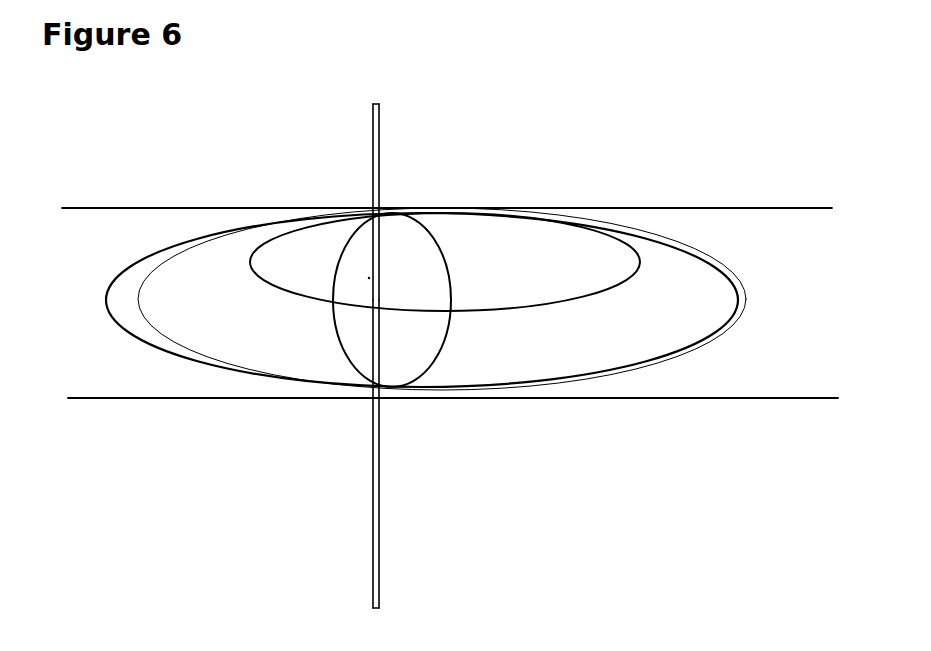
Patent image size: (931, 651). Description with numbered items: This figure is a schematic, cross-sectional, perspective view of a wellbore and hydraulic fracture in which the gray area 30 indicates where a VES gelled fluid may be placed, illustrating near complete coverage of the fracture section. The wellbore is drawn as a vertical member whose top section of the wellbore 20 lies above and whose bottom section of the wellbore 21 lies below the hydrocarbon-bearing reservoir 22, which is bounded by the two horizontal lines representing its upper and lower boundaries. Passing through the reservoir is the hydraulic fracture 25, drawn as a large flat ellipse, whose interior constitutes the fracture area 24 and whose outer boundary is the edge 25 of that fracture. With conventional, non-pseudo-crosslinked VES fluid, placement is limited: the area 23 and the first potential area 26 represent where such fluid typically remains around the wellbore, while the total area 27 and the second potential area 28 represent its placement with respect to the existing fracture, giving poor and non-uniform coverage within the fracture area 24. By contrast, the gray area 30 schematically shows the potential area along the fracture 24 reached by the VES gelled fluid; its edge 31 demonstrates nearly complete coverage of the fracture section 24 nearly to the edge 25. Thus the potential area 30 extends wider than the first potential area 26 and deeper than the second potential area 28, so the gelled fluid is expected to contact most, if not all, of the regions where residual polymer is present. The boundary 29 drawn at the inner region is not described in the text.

The top section of the wellbore 20 is at (372, 104).
The bottom section of the wellbore 21 is at (370, 482).
The hydrocarbon-bearing reservoir 22 is at (460, 207).
The area where non-pseudo-crosslinked VES fluid remains 23 is at (368, 277).
The fracture area 24 is at (122, 305).
The hydraulic fracture 25 is at (725, 268).
The first potential area 26 is at (405, 342).
The total area 27 is at (450, 257).
The second potential area 28 is at (307, 263).
The inner boundary 29 is at (250, 263).
The gray area 30 is at (238, 253).
The edge of the gray region 31 is at (142, 285).